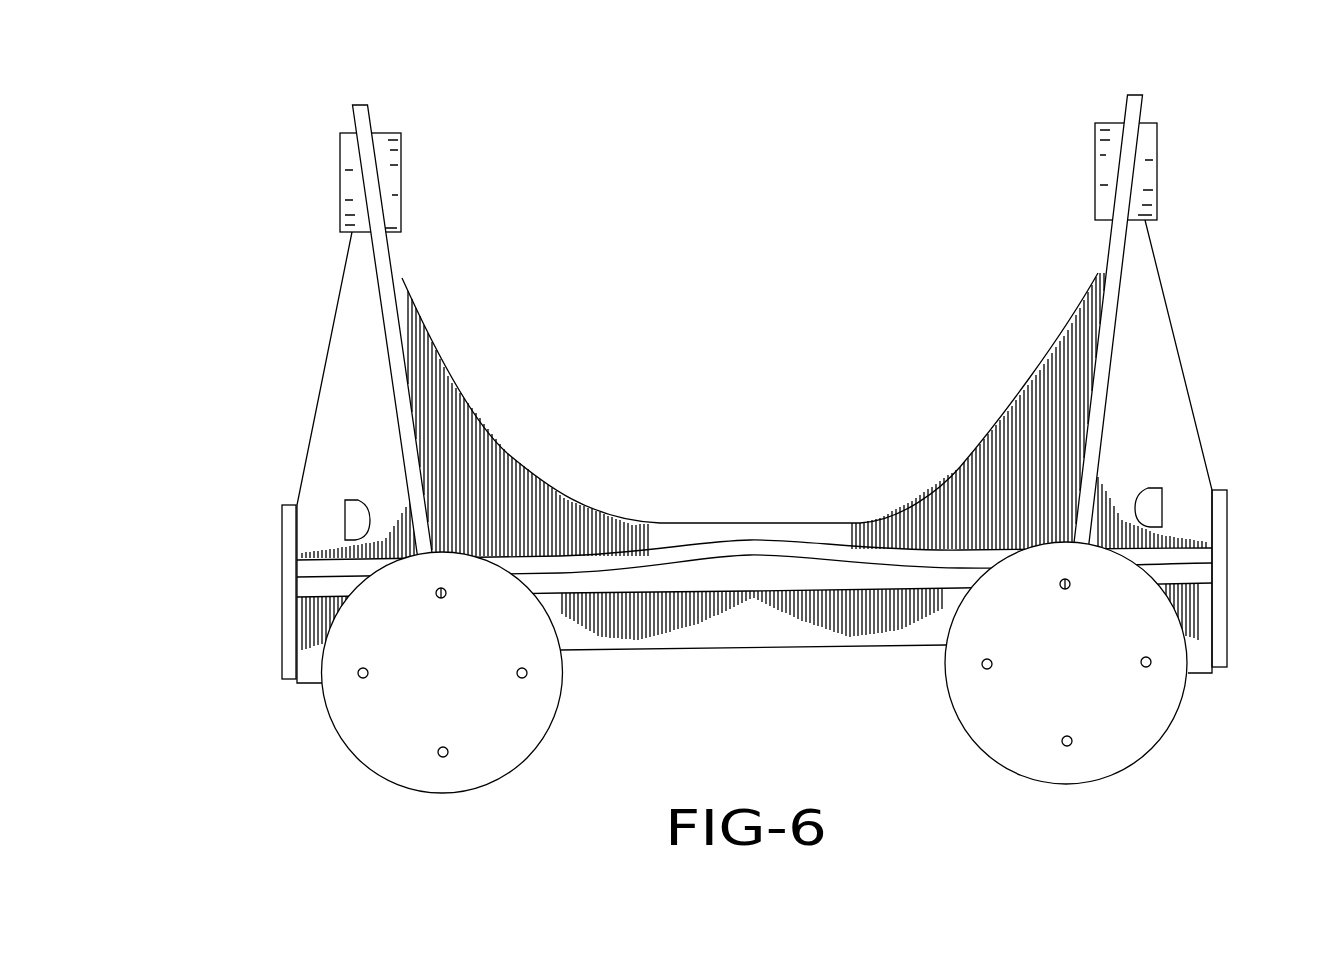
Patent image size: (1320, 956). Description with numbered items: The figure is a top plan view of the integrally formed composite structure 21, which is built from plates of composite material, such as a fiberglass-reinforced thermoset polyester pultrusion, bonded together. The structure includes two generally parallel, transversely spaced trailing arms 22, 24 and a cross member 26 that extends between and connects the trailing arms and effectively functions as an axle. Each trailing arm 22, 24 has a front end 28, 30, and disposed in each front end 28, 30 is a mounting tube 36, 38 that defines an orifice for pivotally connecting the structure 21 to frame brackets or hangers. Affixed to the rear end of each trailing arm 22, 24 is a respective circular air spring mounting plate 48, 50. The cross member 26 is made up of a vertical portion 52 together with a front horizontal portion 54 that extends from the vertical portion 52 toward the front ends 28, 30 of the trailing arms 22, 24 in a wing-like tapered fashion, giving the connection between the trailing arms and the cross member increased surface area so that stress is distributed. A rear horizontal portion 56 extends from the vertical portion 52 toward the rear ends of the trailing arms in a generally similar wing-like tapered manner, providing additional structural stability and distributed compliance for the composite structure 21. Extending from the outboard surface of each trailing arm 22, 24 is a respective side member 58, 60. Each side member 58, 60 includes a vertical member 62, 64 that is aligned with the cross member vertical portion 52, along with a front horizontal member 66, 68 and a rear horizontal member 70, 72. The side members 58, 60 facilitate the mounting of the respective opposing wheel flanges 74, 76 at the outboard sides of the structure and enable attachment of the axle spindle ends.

The composite structure 21 is at (122, 192).
The trailing arm 22 is at (1093, 268).
The trailing arm 24 is at (406, 276).
The cross member 26 is at (757, 654).
The front end 28 is at (1135, 95).
The front end 30 is at (362, 100).
The mounting tube 36 is at (1100, 164).
The mounting tube 38 is at (398, 174).
The circular air spring mounting plate 48 is at (1035, 757).
The circular air spring mounting plate 50 is at (475, 767).
The vertical portion 52 is at (645, 556).
The front horizontal portion 54 is at (1055, 375).
The rear horizontal portion 56 is at (618, 640).
The side member 58 is at (1178, 350).
The side member 60 is at (325, 363).
The vertical member 62 is at (1198, 558).
The vertical member 64 is at (308, 570).
The front horizontal member 66 is at (1167, 423).
The front horizontal member 68 is at (337, 437).
The rear horizontal member 70 is at (1198, 640).
The rear horizontal member 72 is at (310, 653).
The wheel flange 74 is at (1217, 515).
The wheel flange 76 is at (290, 528).